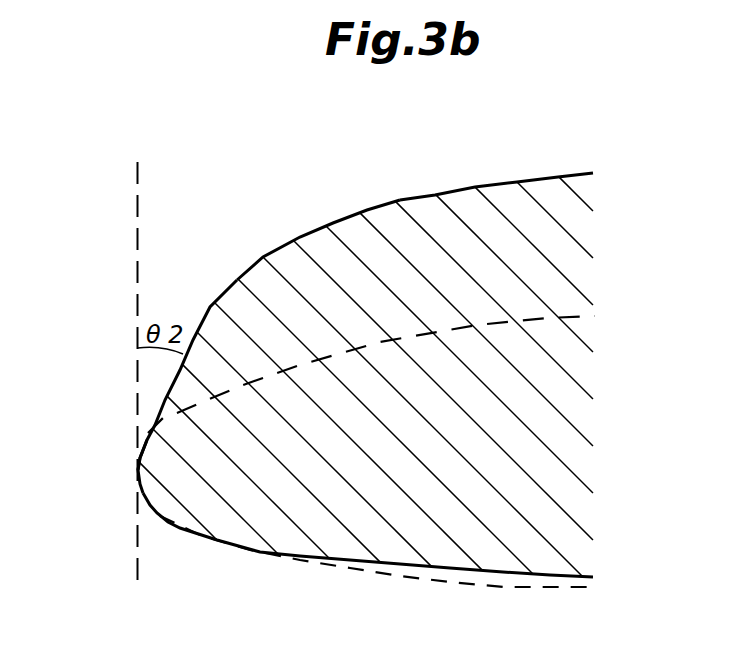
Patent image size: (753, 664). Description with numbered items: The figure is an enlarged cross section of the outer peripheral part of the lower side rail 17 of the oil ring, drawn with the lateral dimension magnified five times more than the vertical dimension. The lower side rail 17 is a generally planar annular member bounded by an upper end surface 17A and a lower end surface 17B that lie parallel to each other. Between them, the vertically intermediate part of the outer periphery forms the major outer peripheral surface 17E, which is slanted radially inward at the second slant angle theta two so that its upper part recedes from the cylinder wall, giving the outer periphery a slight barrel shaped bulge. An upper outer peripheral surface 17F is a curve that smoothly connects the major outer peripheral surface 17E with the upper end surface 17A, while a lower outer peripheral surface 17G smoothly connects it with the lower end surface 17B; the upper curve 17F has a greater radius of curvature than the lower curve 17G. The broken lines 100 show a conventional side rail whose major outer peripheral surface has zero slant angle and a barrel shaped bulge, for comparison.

The lower side rail 17 is at (615, 163).
The upper end surface 17A is at (541, 177).
The lower end surface 17B is at (503, 572).
The major outer peripheral surface 17E is at (210, 307).
The upper outer peripheral surface 17F is at (332, 218).
The lower outer peripheral surface 17G is at (138, 477).
The broken lines 100 is at (553, 317).